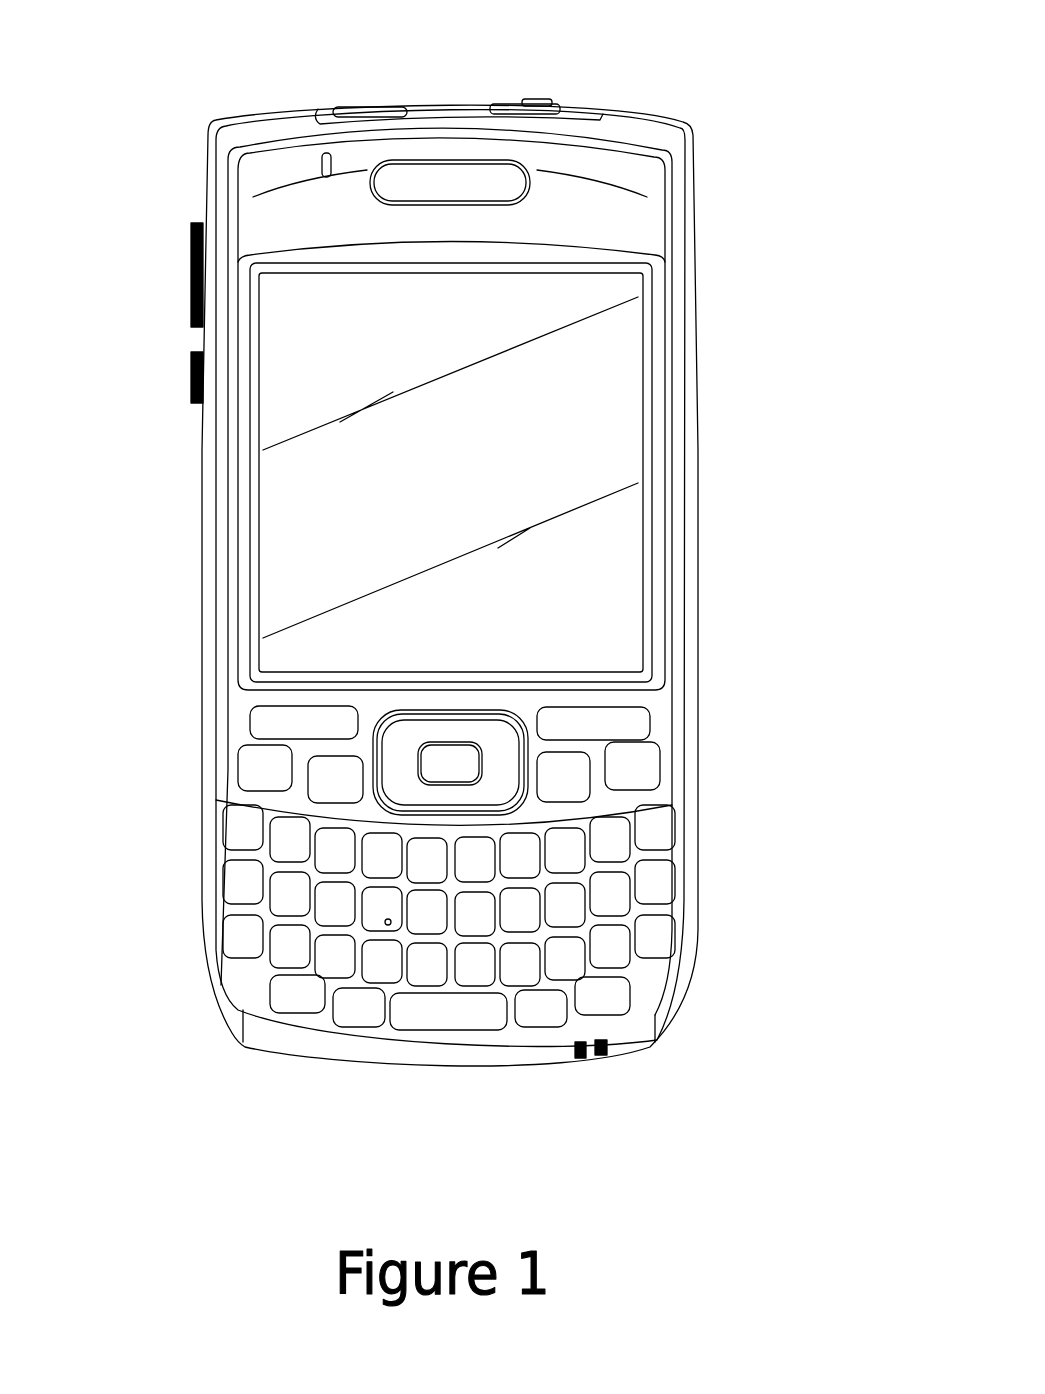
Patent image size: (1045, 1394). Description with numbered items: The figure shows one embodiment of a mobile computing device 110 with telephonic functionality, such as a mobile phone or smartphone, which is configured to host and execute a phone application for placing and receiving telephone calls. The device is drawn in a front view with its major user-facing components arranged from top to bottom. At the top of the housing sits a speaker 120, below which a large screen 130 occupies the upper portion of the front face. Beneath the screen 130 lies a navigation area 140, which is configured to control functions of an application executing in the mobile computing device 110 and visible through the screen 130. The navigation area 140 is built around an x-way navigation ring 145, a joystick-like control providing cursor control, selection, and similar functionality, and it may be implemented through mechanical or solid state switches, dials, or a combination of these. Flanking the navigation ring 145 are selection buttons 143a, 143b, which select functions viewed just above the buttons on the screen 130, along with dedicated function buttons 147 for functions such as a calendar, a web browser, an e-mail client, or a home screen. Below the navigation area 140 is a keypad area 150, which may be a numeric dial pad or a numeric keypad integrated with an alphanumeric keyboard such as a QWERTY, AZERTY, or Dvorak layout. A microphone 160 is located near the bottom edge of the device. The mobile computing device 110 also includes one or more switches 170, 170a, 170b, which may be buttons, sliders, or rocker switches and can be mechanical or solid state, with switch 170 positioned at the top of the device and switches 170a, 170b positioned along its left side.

The mobile computing device 110 is at (695, 133).
The speaker 120 is at (443, 168).
The screen 130 is at (607, 427).
The navigation area 140 is at (489, 714).
The selection button 143a is at (263, 715).
The selection button 143b is at (620, 720).
The navigation ring 145 is at (497, 738).
The dedicated function buttons 147 is at (330, 783).
The keypad area 150 is at (710, 815).
The microphone 160 is at (597, 1068).
The switch 170 is at (533, 100).
The switch 170a is at (185, 262).
The switch 170b is at (190, 378).